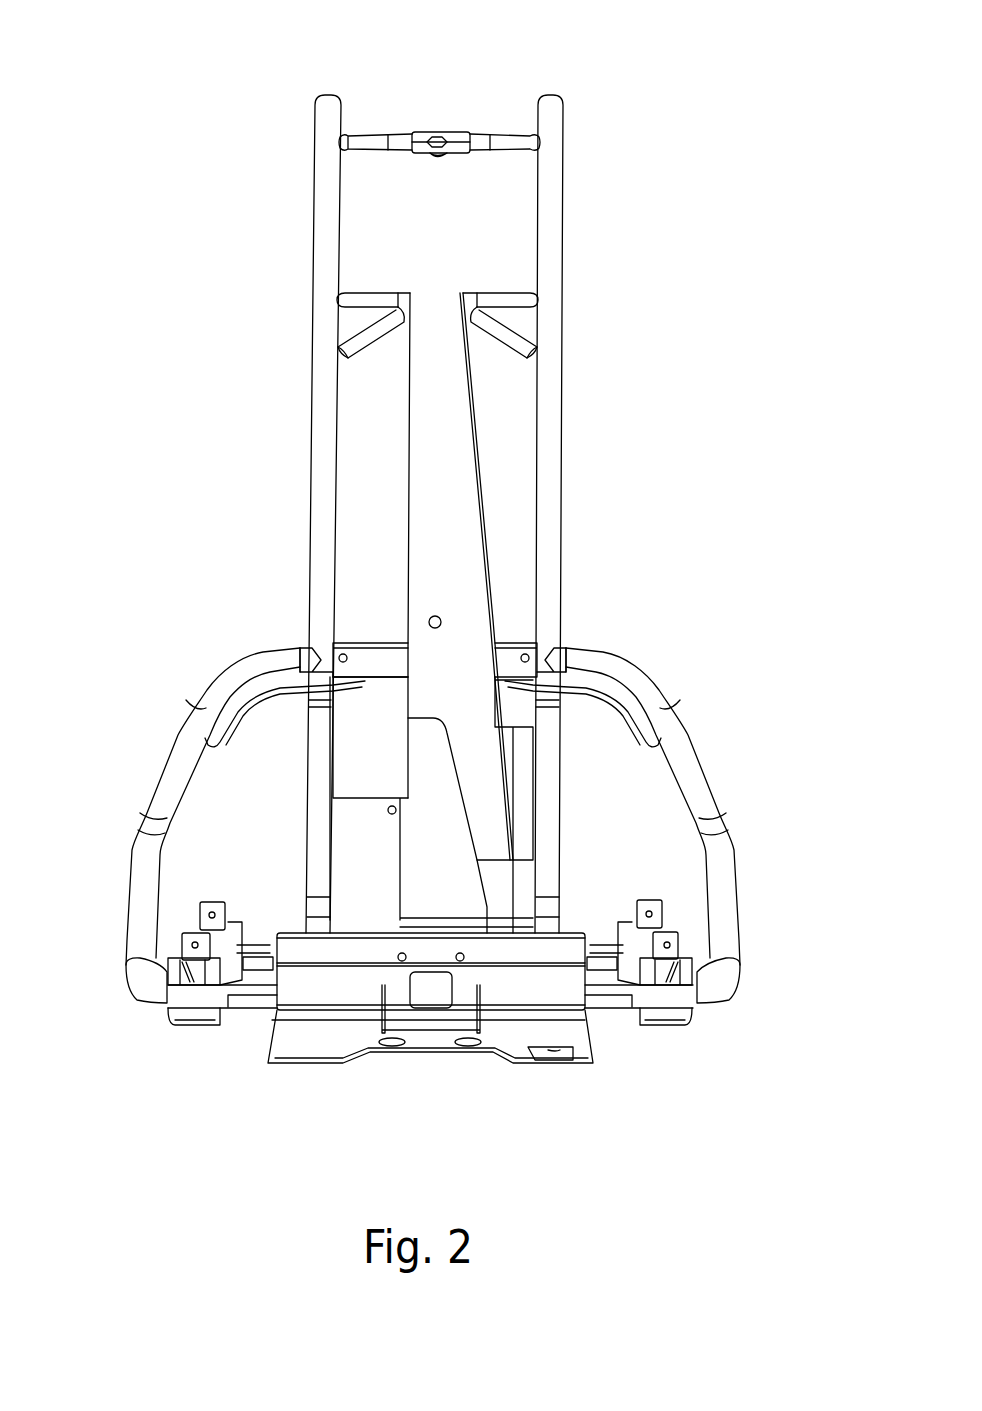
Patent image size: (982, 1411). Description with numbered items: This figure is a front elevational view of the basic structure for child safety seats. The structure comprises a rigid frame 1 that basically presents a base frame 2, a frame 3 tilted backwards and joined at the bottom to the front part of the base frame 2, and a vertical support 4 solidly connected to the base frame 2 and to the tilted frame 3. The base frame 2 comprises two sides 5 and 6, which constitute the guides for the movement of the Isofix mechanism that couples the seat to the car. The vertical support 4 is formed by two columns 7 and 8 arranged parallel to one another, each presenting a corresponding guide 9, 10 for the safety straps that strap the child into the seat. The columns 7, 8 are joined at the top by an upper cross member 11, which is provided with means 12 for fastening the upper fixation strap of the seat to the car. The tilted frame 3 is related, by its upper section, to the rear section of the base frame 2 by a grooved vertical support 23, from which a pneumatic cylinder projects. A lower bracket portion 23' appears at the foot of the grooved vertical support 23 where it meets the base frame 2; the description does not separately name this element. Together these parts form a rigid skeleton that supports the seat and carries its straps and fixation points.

The rigid frame 1 is at (200, 660).
The base frame 2 is at (253, 1005).
The tilted frame 3 is at (692, 772).
The vertical support 4 is at (590, 447).
The side 5 is at (687, 970).
The side 6 is at (173, 970).
The column 7 is at (566, 199).
The column 8 is at (327, 222).
The guide 9 is at (516, 320).
The guide 10 is at (357, 320).
The upper cross member 11 is at (480, 138).
The fastening means 12 is at (435, 138).
The grooved vertical support 23 is at (558, 613).
The bottom support bracket 23' is at (430, 1034).